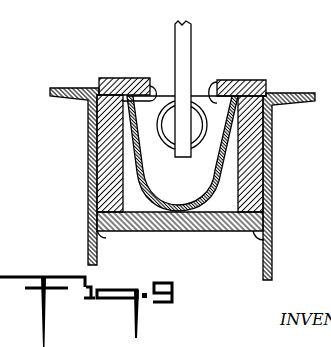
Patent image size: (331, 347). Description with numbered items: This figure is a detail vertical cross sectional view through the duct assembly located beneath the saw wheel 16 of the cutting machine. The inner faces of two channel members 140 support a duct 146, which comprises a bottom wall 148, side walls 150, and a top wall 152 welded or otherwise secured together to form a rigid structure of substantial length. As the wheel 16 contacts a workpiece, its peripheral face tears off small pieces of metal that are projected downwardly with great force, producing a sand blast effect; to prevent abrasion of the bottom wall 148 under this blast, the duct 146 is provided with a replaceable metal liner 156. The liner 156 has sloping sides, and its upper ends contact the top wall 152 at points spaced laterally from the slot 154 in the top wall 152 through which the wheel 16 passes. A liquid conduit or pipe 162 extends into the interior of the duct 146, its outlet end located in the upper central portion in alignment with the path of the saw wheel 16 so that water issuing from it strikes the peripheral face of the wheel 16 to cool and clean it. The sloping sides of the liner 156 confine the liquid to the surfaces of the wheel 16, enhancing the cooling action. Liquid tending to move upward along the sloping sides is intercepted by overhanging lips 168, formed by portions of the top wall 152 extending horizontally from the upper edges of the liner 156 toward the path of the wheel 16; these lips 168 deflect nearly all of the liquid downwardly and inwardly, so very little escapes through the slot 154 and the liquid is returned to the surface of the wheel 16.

The saw wheel 16 is at (188, 53).
The channel members 140 is at (90, 178).
The duct 146 is at (241, 78).
The bottom wall 148 is at (221, 232).
The side walls 150 is at (110, 230).
The top wall 152 is at (117, 78).
The slot 154 is at (158, 84).
The replaceable metal liner 156 is at (140, 176).
The liquid conduit 162 is at (190, 148).
The overhanging lips 168 is at (156, 95).